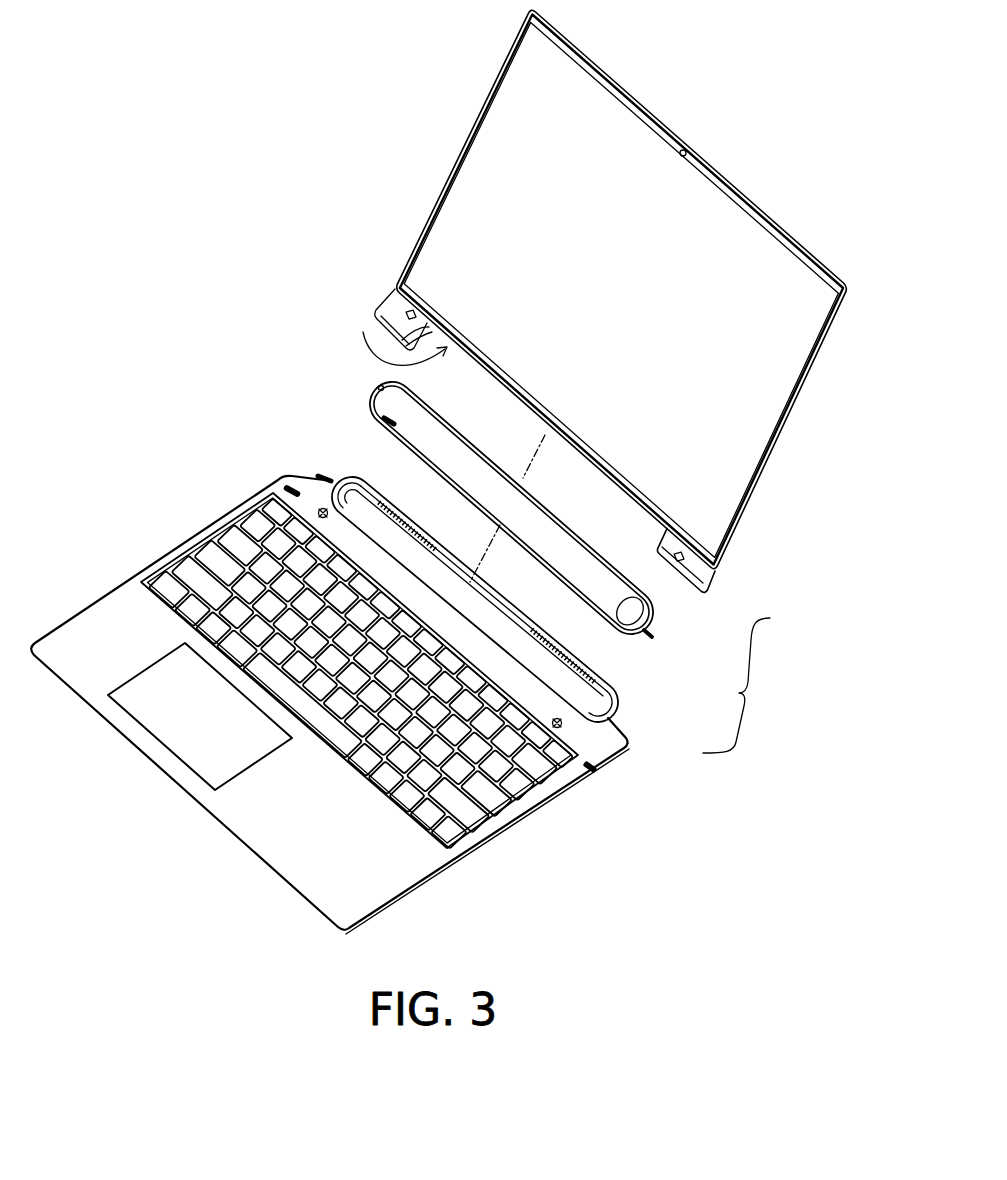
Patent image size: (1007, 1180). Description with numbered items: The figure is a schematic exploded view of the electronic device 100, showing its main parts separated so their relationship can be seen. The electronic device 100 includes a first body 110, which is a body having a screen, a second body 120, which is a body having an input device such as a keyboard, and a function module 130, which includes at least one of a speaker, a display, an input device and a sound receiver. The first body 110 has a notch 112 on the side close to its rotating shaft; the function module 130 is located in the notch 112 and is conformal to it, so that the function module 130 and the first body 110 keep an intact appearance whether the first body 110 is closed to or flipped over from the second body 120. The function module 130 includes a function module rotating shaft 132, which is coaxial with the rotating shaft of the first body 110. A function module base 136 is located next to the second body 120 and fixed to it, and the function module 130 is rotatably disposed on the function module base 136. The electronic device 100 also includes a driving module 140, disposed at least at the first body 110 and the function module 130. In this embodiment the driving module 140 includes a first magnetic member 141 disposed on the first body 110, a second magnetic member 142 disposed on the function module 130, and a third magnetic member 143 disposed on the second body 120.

The electronic device 100 is at (232, 285).
The first body 110 is at (767, 462).
The notch 112 is at (387, 333).
The second body 120 is at (557, 792).
The function module 130 is at (427, 450).
The function module rotating shaft 132 is at (379, 388).
The function module base 136 is at (355, 481).
The driving module 140 is at (750, 685).
The first magnetic member 141 is at (393, 309).
The second magnetic member 142 is at (380, 412).
The third magnetic member 143 is at (323, 509).